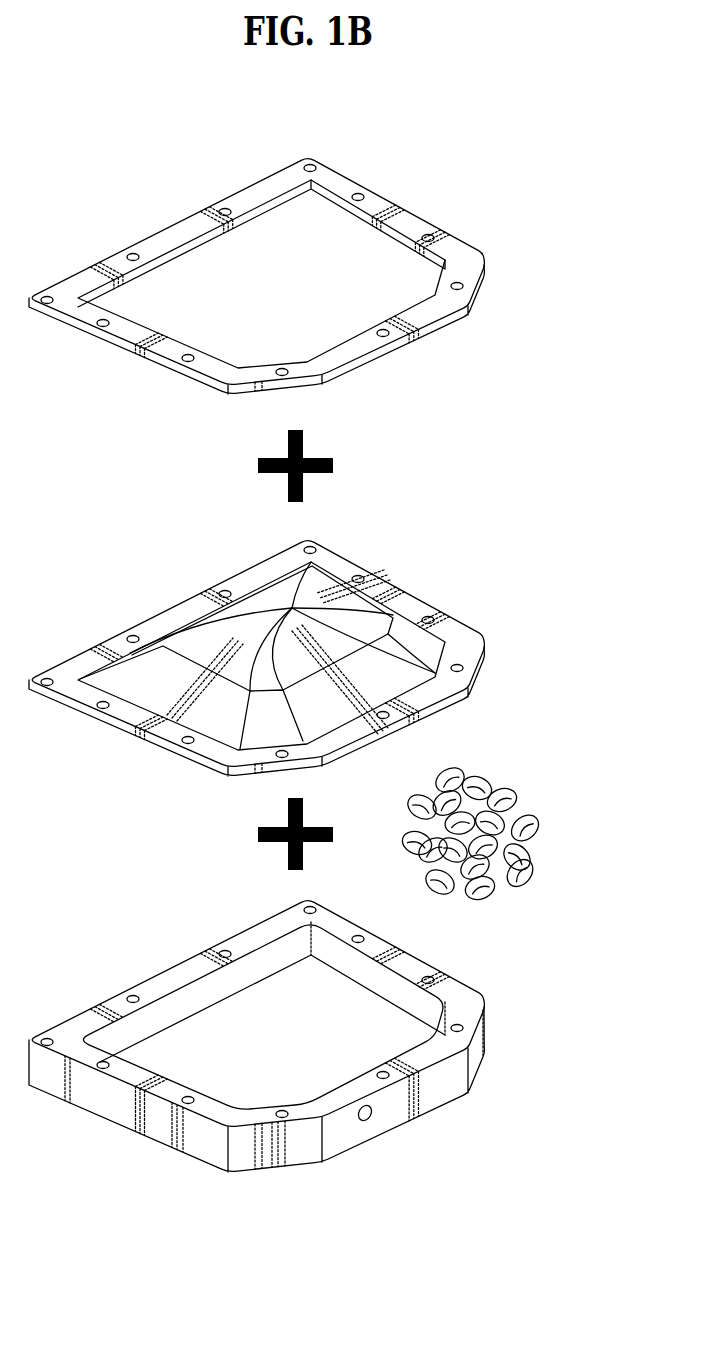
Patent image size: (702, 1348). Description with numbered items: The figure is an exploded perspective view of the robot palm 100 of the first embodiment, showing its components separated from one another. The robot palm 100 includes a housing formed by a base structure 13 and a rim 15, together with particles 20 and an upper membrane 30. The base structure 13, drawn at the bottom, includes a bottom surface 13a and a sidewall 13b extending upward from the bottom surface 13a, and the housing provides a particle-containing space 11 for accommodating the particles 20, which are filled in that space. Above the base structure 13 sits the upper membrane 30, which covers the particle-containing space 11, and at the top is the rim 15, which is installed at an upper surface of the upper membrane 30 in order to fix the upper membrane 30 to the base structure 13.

The robot palm 100 is at (469, 156).
The rim 15 is at (441, 326).
The upper membrane 30 is at (425, 599).
The particles 20 is at (500, 788).
The base structure 13 is at (490, 1029).
The bottom surface 13a is at (166, 1066).
The sidewall 13b is at (102, 1013).
The particle-containing space 11 is at (283, 1058).